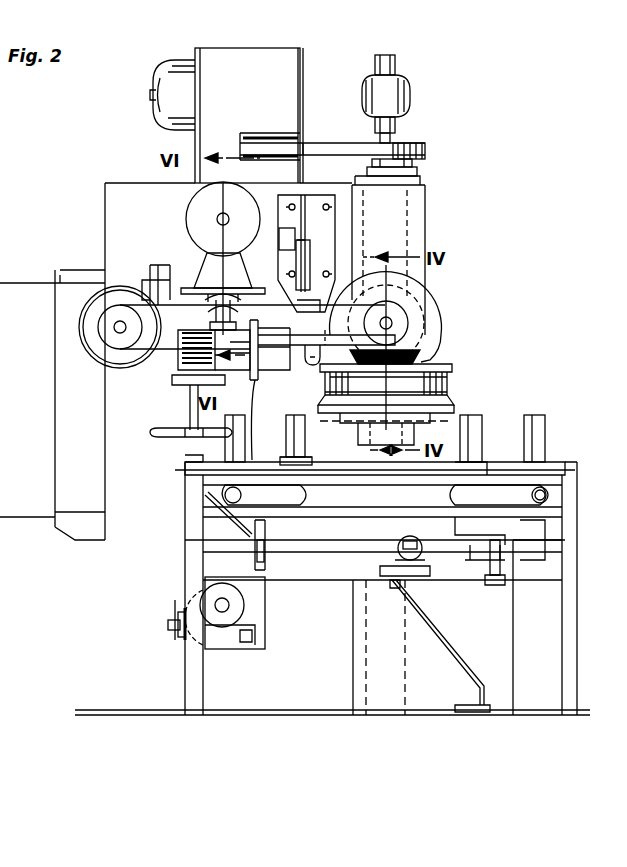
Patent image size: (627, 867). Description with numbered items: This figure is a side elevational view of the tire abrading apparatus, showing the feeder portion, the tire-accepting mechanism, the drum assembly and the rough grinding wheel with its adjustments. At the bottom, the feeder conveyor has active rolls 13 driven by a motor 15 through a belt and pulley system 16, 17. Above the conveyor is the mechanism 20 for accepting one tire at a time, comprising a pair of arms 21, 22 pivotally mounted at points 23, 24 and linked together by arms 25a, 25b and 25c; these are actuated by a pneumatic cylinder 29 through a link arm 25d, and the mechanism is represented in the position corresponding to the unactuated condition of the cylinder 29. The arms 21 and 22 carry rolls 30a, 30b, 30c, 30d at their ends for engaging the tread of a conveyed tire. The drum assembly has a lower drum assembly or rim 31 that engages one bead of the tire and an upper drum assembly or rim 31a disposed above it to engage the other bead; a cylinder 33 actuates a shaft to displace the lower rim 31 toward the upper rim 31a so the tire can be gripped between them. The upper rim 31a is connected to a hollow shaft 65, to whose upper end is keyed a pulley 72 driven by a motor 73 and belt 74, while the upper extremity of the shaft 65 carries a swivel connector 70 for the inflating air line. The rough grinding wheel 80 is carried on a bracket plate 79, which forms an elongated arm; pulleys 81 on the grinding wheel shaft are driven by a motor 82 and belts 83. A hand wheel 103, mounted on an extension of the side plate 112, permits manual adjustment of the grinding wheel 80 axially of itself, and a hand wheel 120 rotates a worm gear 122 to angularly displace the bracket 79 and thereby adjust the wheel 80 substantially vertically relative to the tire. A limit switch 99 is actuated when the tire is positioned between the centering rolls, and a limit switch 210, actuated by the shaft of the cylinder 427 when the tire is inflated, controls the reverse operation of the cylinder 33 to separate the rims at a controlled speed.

The motor 73 is at (162, 93).
The belt 74 is at (318, 150).
The swivel connector 70 is at (410, 95).
The hollow shaft 65 is at (398, 142).
The pulley 72 is at (425, 172).
The cylinder 427 is at (318, 200).
The side plate 112 is at (106, 230).
The hand wheel 103 is at (198, 207).
The limit switch 99 is at (226, 278).
The limit switch 210 is at (268, 238).
The belts 83 is at (160, 308).
The motor 82 is at (104, 355).
The pulleys 81 is at (403, 326).
The rough grinding wheel 80 is at (422, 355).
The bracket plate 79 is at (298, 360).
The worm gear 122 is at (190, 375).
The hand wheel 120 is at (170, 433).
The lower drum assembly or rim 31 is at (440, 402).
The upper drum assembly or rim 31a is at (322, 392).
The mechanism 20 is at (515, 413).
The roll 30a is at (300, 427).
The roll 30b is at (222, 438).
The roll 30c is at (470, 420).
The roll 30d is at (538, 443).
The arm 21 is at (270, 467).
The arm 22 is at (496, 480).
The active rolls 13 is at (330, 476).
The belt and pulley system 16 is at (183, 535).
The arm 25a is at (305, 545).
The arm 25b is at (395, 510).
The arm 25c is at (470, 540).
The link arm 25d is at (410, 560).
The pivot point 23 is at (275, 560).
The pneumatic cylinder 29 is at (398, 560).
The pivot point 24 is at (505, 580).
The motor 15 is at (222, 625).
The belt and pulley system 17 is at (178, 636).
The cylinder 33 is at (388, 698).